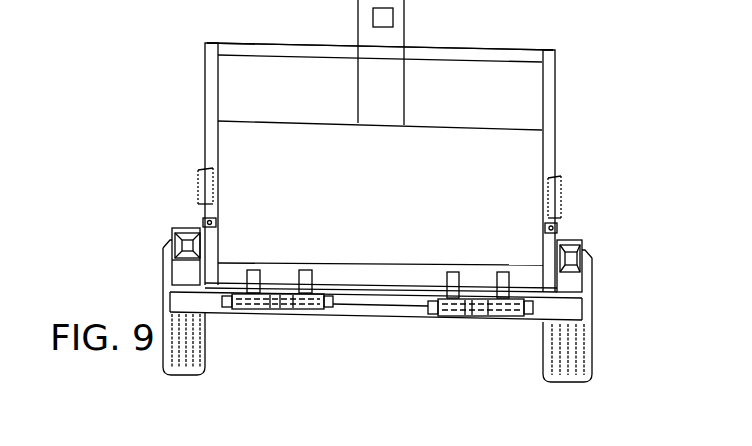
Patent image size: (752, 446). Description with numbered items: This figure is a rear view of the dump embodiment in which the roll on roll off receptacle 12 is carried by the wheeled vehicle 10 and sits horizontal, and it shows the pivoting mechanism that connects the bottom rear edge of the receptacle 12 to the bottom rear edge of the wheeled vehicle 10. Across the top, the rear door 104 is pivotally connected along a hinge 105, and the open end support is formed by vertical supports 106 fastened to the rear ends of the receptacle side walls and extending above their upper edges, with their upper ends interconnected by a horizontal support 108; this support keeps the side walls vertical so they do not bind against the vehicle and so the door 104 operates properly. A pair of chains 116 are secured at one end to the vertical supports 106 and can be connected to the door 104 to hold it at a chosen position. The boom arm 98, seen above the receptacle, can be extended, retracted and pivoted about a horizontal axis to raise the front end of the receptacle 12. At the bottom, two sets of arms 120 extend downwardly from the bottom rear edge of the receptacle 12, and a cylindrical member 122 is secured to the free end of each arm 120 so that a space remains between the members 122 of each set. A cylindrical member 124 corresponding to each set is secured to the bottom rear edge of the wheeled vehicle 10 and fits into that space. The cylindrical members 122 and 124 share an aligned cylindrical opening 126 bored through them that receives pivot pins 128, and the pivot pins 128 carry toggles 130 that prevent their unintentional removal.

The wheeled vehicle 10 is at (146, 252).
The roll on roll off receptacle 12 is at (582, 130).
The boom arm 98 is at (393, 17).
The door 104 is at (500, 170).
The hinge 105 is at (386, 262).
The vertical supports 106 is at (208, 86).
The horizontal support 108 is at (503, 58).
The chains 116 is at (198, 181).
The arms 120 is at (255, 270).
The cylindrical members 122 is at (238, 309).
The cylindrical member 124 is at (283, 309).
The cylindrical opening 126 is at (283, 292).
The pivot pins 128 is at (425, 305).
The toggles 130 is at (220, 293).